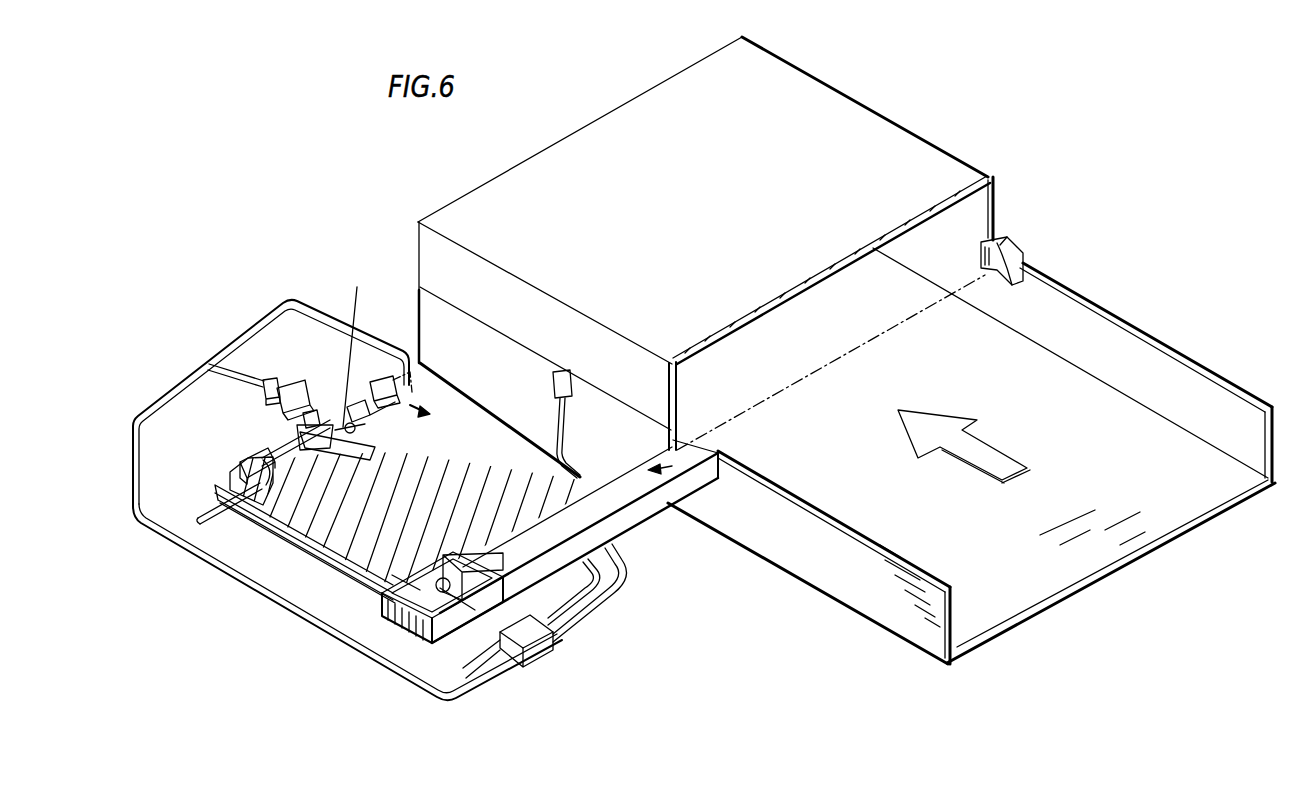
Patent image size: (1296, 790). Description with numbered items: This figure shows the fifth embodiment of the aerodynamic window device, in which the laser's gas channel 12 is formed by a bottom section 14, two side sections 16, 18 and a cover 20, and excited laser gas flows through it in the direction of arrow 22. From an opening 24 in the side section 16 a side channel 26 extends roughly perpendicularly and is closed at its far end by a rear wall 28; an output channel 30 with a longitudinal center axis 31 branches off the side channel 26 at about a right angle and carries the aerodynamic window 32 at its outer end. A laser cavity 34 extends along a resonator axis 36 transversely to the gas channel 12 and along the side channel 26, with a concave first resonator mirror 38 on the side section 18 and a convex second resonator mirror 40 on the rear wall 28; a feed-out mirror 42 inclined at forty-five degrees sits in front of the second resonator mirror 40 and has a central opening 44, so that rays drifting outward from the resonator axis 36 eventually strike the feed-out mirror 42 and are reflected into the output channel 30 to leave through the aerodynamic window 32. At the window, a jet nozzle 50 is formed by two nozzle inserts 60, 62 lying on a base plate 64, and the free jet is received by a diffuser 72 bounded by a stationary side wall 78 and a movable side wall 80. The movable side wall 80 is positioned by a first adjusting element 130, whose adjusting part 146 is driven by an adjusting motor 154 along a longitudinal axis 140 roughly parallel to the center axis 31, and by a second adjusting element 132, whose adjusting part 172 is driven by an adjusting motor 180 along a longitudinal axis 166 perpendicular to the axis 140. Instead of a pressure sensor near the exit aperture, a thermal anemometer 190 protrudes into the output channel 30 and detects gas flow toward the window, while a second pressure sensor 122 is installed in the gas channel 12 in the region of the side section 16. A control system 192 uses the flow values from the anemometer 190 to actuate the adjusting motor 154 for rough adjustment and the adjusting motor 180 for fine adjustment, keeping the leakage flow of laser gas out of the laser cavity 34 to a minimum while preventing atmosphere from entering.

The gas channel 12 is at (1054, 322).
The bottom section 14 is at (1000, 588).
The side section 16 is at (835, 532).
The side section 18 is at (1140, 350).
The cover 20 is at (678, 280).
The arrow 22 is at (1030, 471).
The opening 24 is at (700, 447).
The side channel 26 is at (640, 487).
The rear wall 28 is at (395, 615).
The output channel 30 is at (370, 510).
The longitudinal center axis 31 is at (188, 396).
The aerodynamic window 32 is at (212, 452).
The laser cavity 34 is at (665, 466).
The resonator axis 36 is at (897, 326).
The first resonator mirror 38 is at (1012, 252).
The second resonator mirror 40 is at (412, 640).
The feed-out mirror 42 is at (462, 590).
The central opening 44 is at (455, 640).
The jet nozzle 50 is at (284, 482).
The nozzle insert 60 is at (262, 520).
The nozzle insert 62 is at (232, 476).
The base plate 64 is at (360, 565).
The diffuser 72 is at (283, 438).
The stationary side wall 78 is at (372, 440).
The movable side wall 80 is at (357, 300).
The second pressure sensor 122 is at (558, 372).
The first adjusting element 130 is at (310, 396).
The second adjusting element 132 is at (415, 412).
The longitudinal axis 140 is at (240, 375).
The adjusting part 146 is at (318, 415).
The adjusting motor 154 is at (282, 385).
The longitudinal axis 166 is at (410, 372).
The adjusting part 172 is at (370, 412).
The adjusting motor 180 is at (380, 382).
The thermal anemometer 190 is at (365, 432).
The control system 192 is at (548, 650).